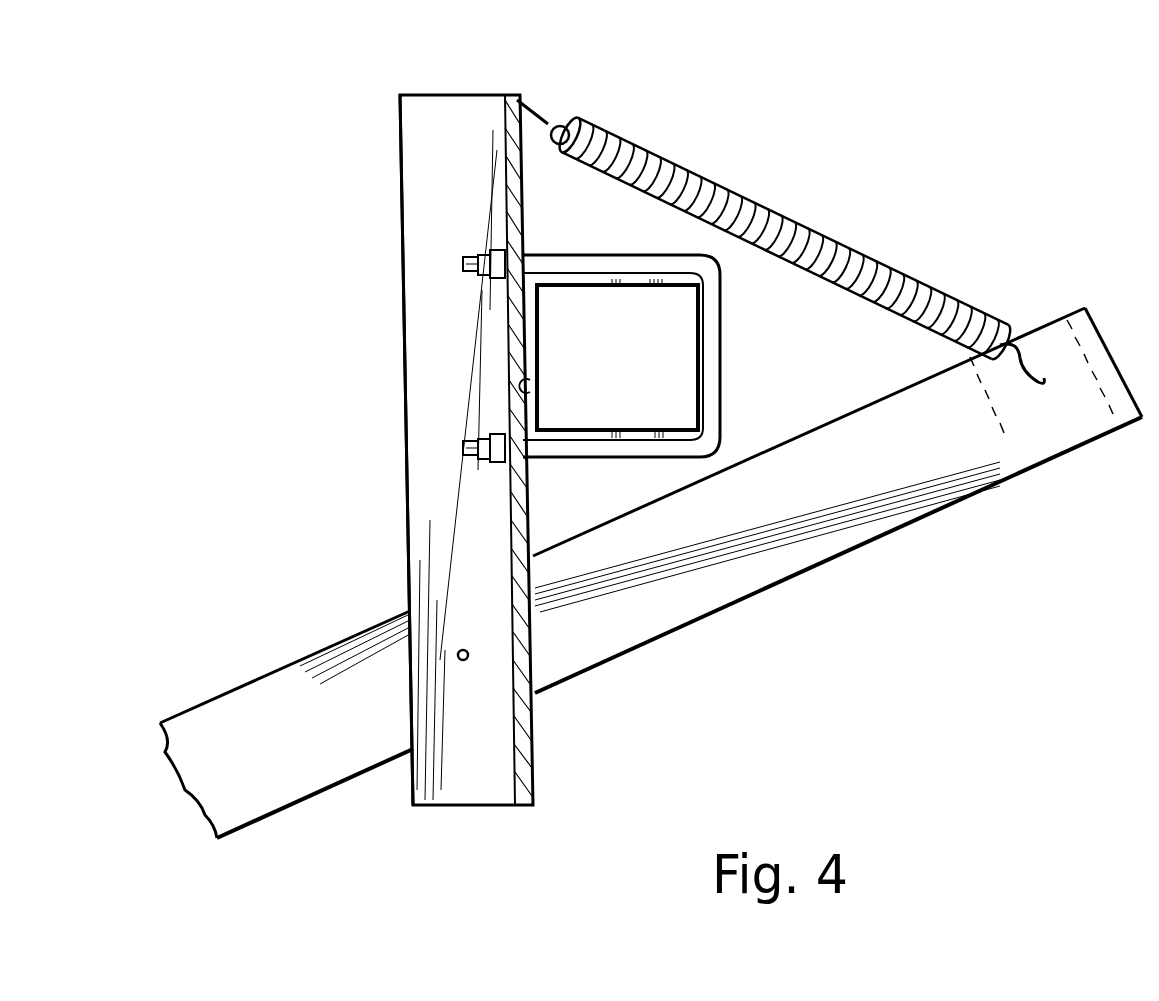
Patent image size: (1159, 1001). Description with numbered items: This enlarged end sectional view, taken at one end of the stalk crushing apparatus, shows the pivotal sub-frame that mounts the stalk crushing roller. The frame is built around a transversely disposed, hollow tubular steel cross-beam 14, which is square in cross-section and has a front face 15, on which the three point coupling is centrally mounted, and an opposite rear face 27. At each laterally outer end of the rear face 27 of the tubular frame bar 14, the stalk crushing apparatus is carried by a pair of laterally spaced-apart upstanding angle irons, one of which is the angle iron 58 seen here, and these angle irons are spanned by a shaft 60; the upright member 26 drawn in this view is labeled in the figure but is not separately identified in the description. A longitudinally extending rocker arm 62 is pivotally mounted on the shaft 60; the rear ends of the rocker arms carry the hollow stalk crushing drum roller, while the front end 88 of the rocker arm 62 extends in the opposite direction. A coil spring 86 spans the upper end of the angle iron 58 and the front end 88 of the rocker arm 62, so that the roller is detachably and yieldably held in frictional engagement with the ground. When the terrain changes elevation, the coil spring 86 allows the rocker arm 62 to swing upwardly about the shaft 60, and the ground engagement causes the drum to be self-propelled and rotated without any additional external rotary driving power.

The cross-beam 14 is at (523, 303).
The front face 15 is at (718, 347).
The upright board 26 is at (438, 95).
The rear face 27 is at (530, 386).
The angle iron 58 is at (400, 222).
The shaft 60 is at (458, 650).
The rocker arm 62 is at (262, 690).
The coil spring 86 is at (772, 210).
The front end 88 is at (1087, 305).